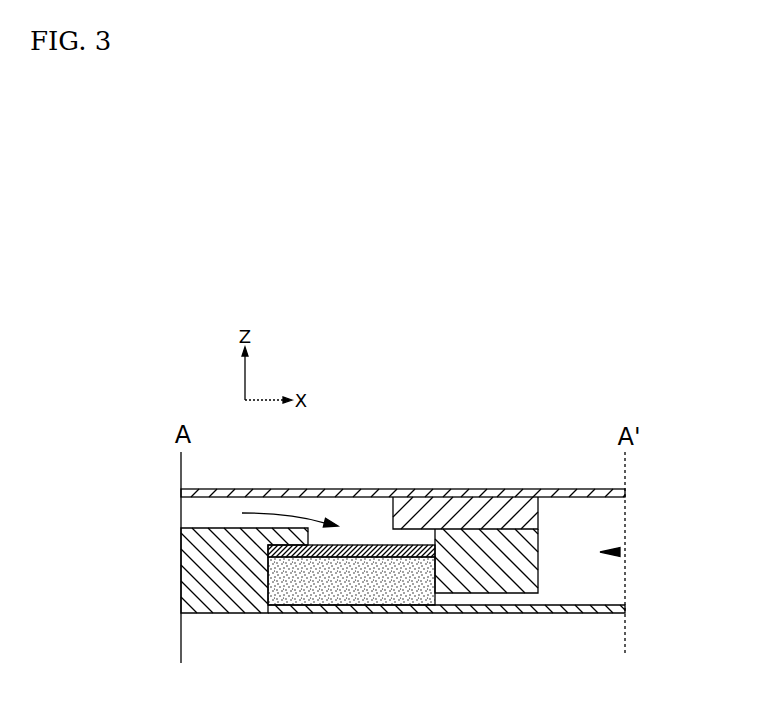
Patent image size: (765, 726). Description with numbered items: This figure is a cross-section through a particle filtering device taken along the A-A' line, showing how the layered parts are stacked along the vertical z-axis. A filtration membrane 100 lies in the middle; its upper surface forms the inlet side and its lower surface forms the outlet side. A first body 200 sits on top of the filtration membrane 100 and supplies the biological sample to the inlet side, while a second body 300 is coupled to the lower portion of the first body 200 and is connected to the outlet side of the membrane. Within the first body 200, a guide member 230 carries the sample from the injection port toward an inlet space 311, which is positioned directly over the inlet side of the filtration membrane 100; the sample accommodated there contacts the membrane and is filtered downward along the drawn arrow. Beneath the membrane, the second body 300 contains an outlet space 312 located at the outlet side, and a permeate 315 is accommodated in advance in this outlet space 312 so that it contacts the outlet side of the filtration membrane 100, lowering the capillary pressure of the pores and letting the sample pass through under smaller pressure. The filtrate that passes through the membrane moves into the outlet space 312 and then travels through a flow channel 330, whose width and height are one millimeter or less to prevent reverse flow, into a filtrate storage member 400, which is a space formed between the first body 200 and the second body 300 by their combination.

The filtration membrane 100 is at (322, 557).
The first body 200 is at (499, 497).
The guide member 230 is at (214, 509).
The second body 300 is at (210, 605).
The inlet space 311 is at (350, 527).
The outlet space 312 is at (366, 588).
The permeate 315 is at (412, 597).
The flow channel 330 is at (493, 602).
The filtrate storage member 400 is at (618, 552).